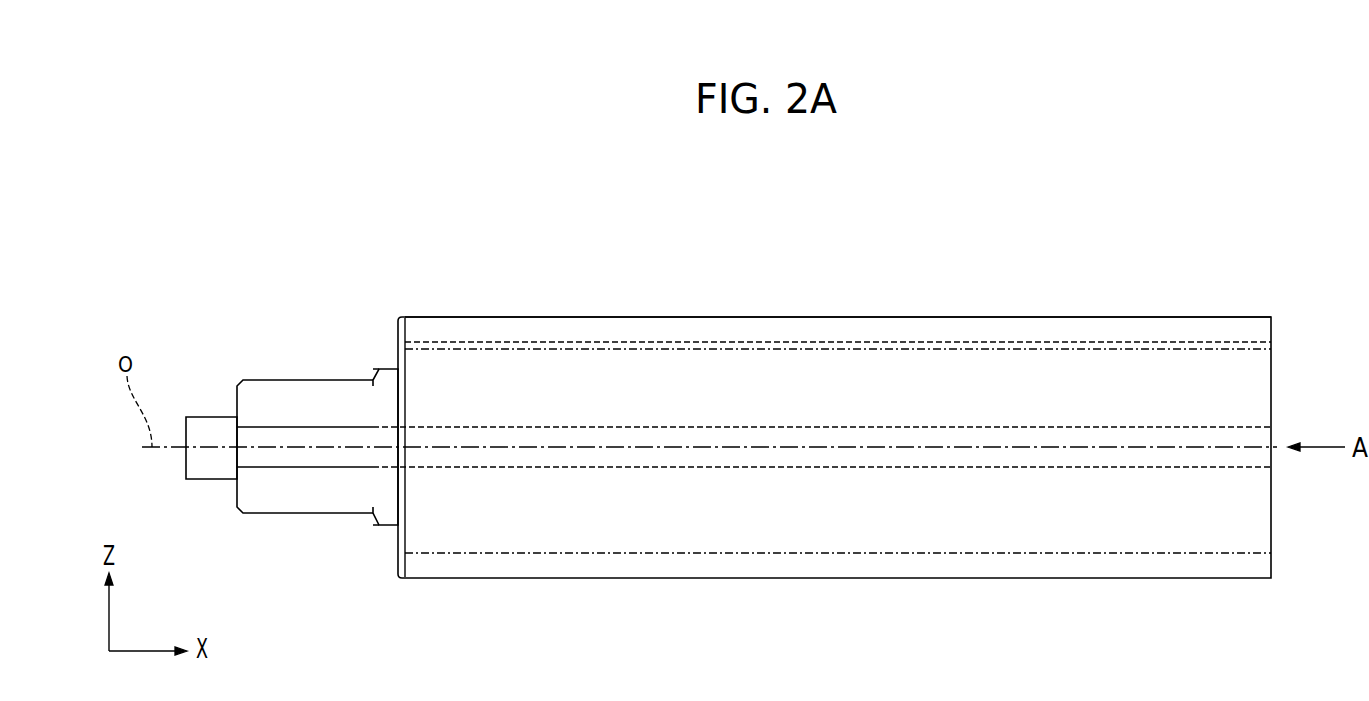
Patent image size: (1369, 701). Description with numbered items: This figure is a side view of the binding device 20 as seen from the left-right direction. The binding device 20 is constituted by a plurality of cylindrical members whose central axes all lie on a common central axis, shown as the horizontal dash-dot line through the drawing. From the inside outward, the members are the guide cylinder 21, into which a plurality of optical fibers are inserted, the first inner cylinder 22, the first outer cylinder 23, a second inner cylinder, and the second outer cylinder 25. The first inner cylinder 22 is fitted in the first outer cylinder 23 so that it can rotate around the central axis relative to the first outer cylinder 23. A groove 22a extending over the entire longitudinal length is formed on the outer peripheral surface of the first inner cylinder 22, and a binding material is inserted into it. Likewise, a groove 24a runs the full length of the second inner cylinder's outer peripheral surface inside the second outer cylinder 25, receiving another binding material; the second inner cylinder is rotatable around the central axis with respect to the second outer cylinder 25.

The binding device 20 is at (475, 298).
The guide cylinder 21 is at (208, 417).
The first inner cylinder 22 is at (272, 387).
The first outer cylinder 23 is at (387, 370).
The groove 22a is at (697, 428).
The groove 24a is at (568, 349).
The second outer cylinder 25 is at (860, 316).